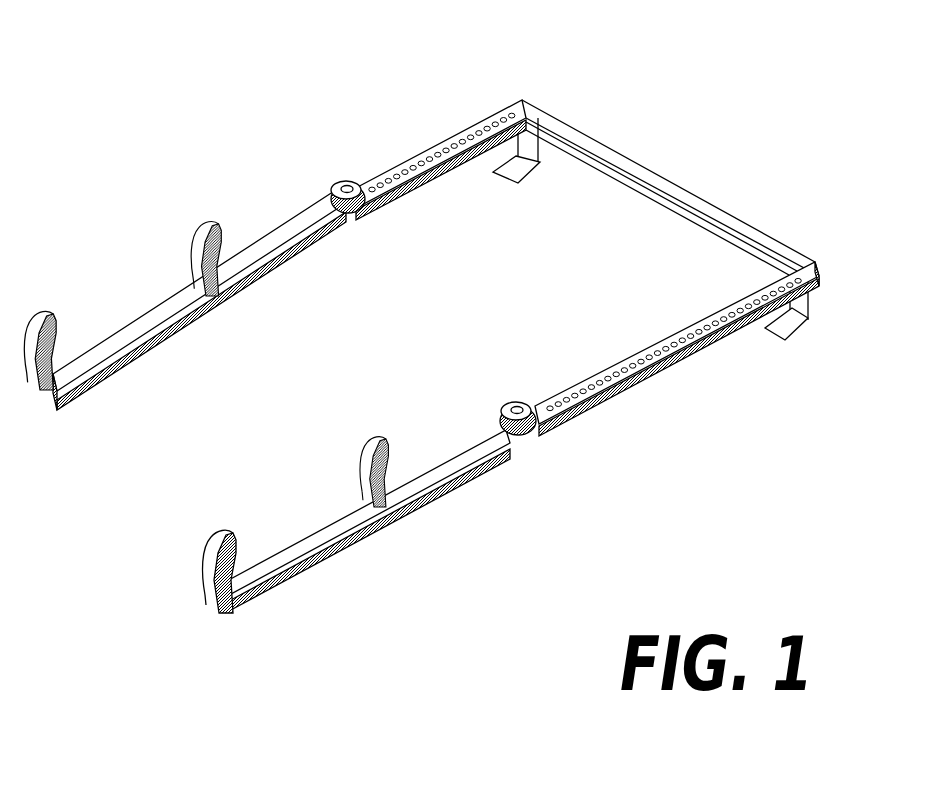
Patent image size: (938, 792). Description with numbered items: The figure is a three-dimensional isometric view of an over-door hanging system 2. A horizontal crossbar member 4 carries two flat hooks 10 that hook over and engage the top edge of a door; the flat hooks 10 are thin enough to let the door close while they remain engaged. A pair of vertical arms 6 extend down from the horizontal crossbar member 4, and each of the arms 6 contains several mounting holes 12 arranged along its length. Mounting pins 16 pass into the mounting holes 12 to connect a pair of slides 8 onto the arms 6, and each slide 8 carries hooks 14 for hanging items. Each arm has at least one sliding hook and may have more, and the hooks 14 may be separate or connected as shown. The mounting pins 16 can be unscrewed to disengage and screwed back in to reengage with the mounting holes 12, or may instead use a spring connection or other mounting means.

The over-door hanging system 2 is at (126, 128).
The horizontal crossbar member 4 is at (710, 214).
The vertical arms 6 is at (427, 183).
The slides 8 is at (293, 250).
The flat hooks 10 is at (513, 168).
The mounting holes 12 is at (708, 313).
The hooks 14 is at (206, 417).
The mounting pins 16 is at (352, 205).